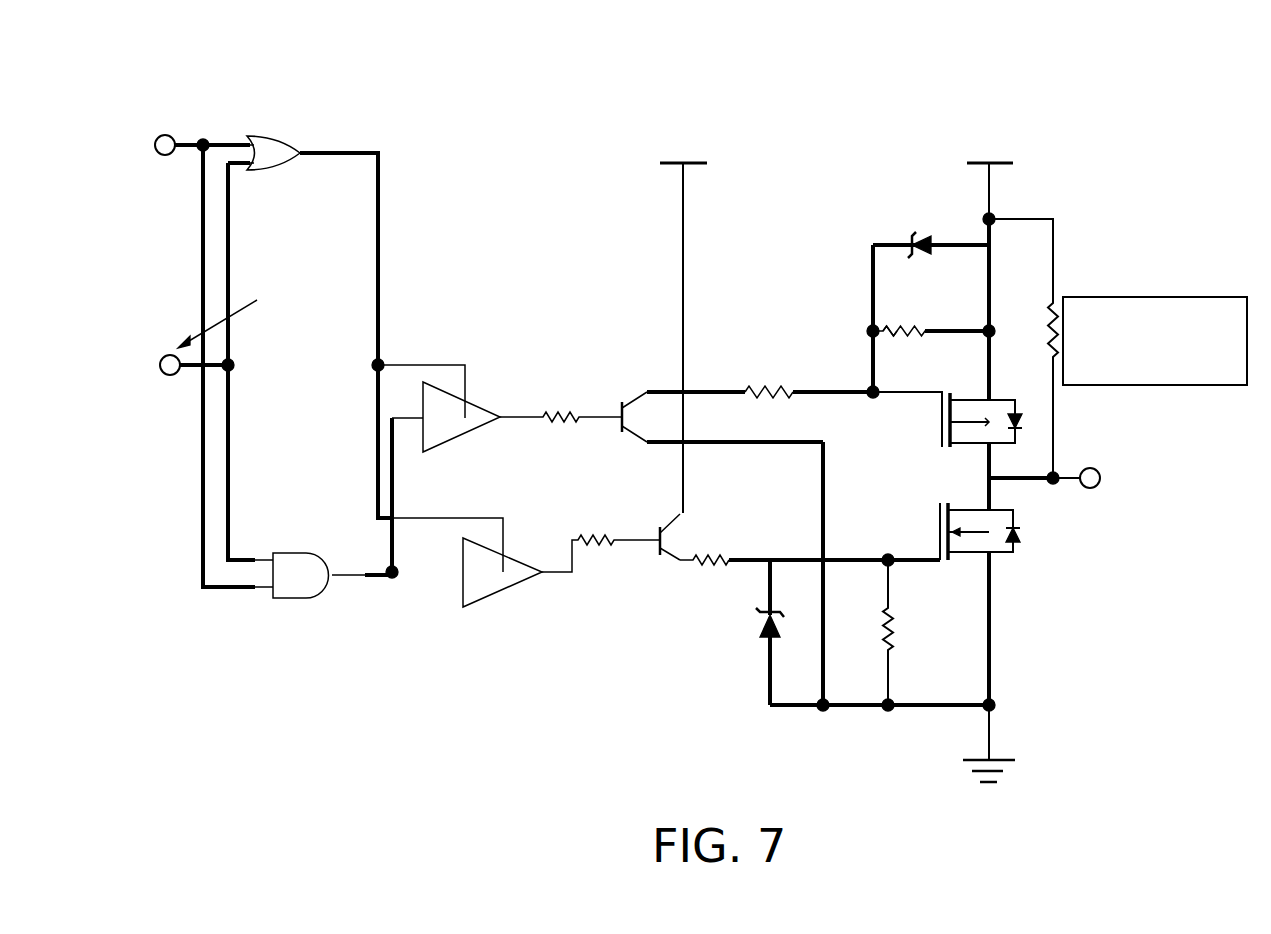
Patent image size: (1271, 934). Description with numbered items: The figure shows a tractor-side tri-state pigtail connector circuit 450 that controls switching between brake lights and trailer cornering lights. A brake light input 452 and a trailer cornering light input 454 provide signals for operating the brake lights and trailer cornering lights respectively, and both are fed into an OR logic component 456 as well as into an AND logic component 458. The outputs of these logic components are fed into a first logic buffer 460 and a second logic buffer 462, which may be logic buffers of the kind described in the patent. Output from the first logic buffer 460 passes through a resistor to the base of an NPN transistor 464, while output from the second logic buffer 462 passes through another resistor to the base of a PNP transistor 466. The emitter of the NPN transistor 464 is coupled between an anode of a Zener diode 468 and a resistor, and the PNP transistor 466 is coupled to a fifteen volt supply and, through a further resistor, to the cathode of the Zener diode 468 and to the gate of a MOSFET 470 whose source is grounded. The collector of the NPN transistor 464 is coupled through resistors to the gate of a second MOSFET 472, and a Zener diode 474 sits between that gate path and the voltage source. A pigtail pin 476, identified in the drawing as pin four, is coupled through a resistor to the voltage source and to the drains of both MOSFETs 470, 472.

The tractor-side tri-state pigtail connector circuit 450 is at (1131, 39).
The brake light input 452 is at (152, 148).
The trailer cornering light input 454 is at (157, 367).
The OR logic component 456 is at (272, 145).
The AND logic component 458 is at (292, 560).
The first logic buffer 460 is at (452, 428).
The second logic buffer 462 is at (495, 580).
The NPN transistor 464 is at (617, 398).
The PNP transistor 466 is at (655, 565).
The Zener diode 468 is at (752, 622).
The MOSFET 470 is at (1012, 568).
The second MOSFET 472 is at (932, 424).
The Zener diode 474 is at (906, 229).
The pig-tail pin 4 476 is at (1094, 488).